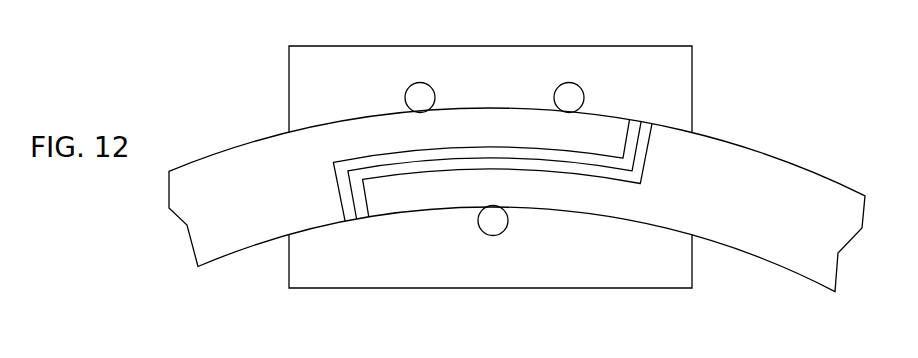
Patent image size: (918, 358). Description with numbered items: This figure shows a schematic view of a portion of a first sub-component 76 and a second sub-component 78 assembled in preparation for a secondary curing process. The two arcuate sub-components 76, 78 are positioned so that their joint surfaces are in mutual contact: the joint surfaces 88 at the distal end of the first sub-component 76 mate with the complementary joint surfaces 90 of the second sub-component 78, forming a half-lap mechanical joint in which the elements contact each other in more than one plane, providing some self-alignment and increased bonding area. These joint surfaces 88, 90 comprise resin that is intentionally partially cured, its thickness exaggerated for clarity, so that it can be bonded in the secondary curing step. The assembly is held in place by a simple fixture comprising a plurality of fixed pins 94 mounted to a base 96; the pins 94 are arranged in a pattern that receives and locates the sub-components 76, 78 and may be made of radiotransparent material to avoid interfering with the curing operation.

The first sub-component 76 is at (230, 219).
The second sub-component 78 is at (828, 239).
The joint surfaces 88 is at (484, 137).
The joint surfaces 90 is at (521, 180).
The fixed pins 94 is at (417, 90).
The base 96 is at (682, 87).